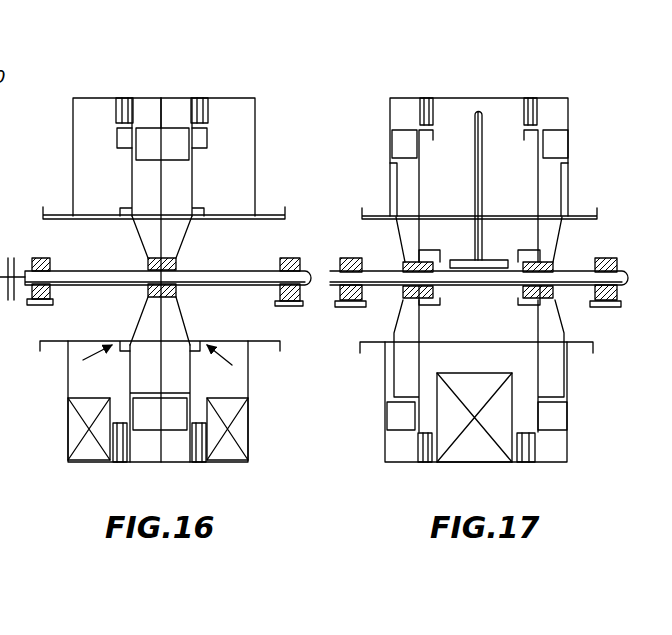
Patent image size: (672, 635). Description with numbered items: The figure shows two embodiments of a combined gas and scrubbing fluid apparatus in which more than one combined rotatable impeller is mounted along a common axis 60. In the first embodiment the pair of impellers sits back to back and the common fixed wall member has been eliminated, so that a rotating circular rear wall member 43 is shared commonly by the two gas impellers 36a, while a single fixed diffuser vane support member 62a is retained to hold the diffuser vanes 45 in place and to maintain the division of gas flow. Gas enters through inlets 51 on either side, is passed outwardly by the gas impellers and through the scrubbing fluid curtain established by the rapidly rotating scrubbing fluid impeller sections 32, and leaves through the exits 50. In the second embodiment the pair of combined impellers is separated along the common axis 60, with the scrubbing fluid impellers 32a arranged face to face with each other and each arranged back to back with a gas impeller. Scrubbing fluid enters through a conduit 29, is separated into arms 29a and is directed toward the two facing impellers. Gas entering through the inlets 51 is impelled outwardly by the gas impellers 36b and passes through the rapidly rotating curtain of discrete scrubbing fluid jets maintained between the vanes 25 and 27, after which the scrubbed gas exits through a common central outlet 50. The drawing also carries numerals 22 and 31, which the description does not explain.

In FIG. 16, the shaft collar and washer 22 is at (38, 306).
In FIG. 17, the shaft collar and washer 22 is at (322, 328).
In FIG. 16, the vane 25 is at (140, 98).
In FIG. 17, the vane 25 is at (433, 98).
In FIG. 16, the vane 27 is at (113, 99).
In FIG. 17, the vane 27 is at (418, 98).
In FIG. 17, the conduit 29 is at (478, 112).
In FIG. 17, the arms 29a is at (463, 268).
In FIG. 17, the retaining bracket 31 is at (430, 248).
In FIG. 16, the scrubbing fluid impeller section 32 is at (127, 182).
In FIG. 17, the scrubbing fluid impeller 32a is at (421, 190).
In FIG. 16, the gas impeller 36a is at (137, 232).
In FIG. 17, the gas impeller 36b is at (397, 232).
In FIG. 16, the rotating circular rear wall member 43 is at (162, 322).
In FIG. 16, the diffuser vanes 45 is at (150, 142).
In FIG. 17, the diffuser vanes 45 is at (405, 143).
In FIG. 16, the exit 50 is at (88, 430).
In FIG. 17, the exit 50 is at (458, 388).
In FIG. 16, the inlet 51 is at (56, 215).
In FIG. 17, the inlet 51 is at (585, 215).
In FIG. 17, the common axis 60 is at (448, 286).
In FIG. 16, the fixed diffuser vane support member 62a is at (166, 98).